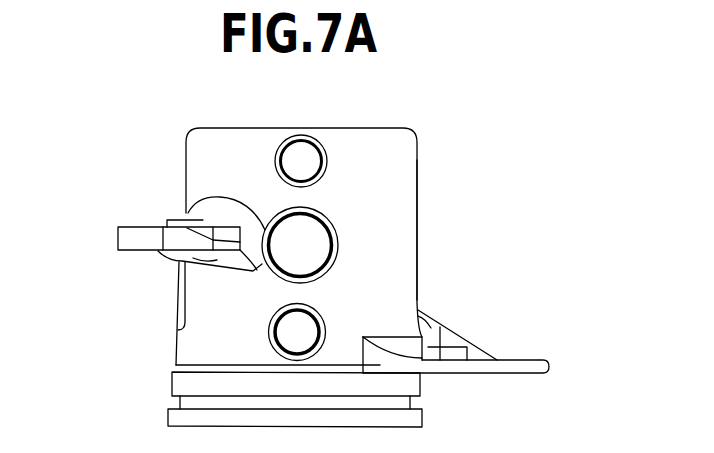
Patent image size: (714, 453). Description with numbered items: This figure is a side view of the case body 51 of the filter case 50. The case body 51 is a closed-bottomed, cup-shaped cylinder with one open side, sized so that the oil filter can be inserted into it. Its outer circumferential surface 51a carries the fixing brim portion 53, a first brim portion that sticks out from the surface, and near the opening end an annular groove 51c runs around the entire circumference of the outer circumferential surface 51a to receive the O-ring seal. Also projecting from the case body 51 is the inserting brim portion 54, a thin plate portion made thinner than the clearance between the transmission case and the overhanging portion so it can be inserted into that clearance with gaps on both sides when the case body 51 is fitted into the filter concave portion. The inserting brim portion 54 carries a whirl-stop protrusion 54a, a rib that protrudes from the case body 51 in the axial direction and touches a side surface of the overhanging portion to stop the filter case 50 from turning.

The filter case 50 is at (148, 128).
The case body 51 is at (412, 120).
The outer circumferential surface 51a is at (390, 230).
The annular groove 51c is at (428, 407).
The fixing brim portion 53 is at (137, 237).
The inserting brim portion 54 is at (518, 358).
The whirl-stop protrusion 54a is at (440, 340).